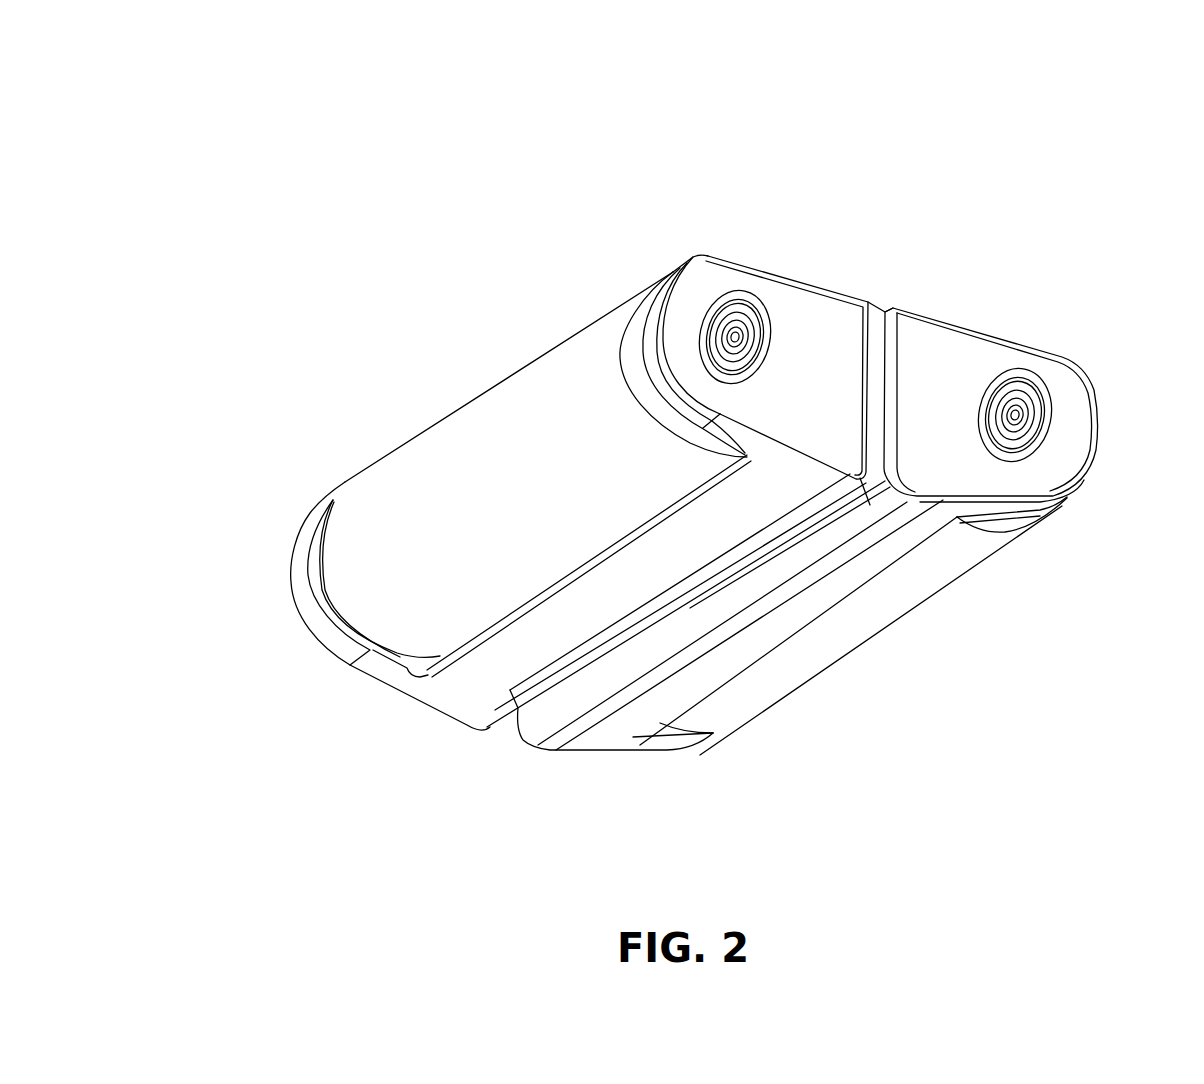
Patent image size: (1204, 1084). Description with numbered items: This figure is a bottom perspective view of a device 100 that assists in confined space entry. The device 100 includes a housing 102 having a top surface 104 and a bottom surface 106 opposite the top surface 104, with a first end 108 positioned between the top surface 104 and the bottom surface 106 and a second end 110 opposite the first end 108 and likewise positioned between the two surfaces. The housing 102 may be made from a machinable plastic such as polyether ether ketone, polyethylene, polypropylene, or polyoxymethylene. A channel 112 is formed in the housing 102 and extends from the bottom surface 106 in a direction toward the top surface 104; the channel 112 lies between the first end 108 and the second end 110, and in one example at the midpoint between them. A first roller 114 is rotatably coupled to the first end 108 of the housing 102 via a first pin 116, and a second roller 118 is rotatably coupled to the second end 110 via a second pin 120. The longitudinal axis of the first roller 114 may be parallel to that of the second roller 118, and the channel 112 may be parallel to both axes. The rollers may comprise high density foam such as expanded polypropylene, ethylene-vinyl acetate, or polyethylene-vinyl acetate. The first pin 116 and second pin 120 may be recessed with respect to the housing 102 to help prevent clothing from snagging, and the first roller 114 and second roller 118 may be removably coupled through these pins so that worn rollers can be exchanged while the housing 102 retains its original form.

The device 100 is at (80, 90).
The housing 102 is at (823, 315).
The top surface 104 is at (945, 297).
The bottom surface 106 is at (528, 655).
The first end 108 is at (659, 244).
The second end 110 is at (1112, 378).
The channel 112 is at (708, 605).
The first roller 114 is at (478, 418).
The first pin 116 is at (737, 340).
The second roller 118 is at (918, 585).
The second pin 120 is at (1016, 418).